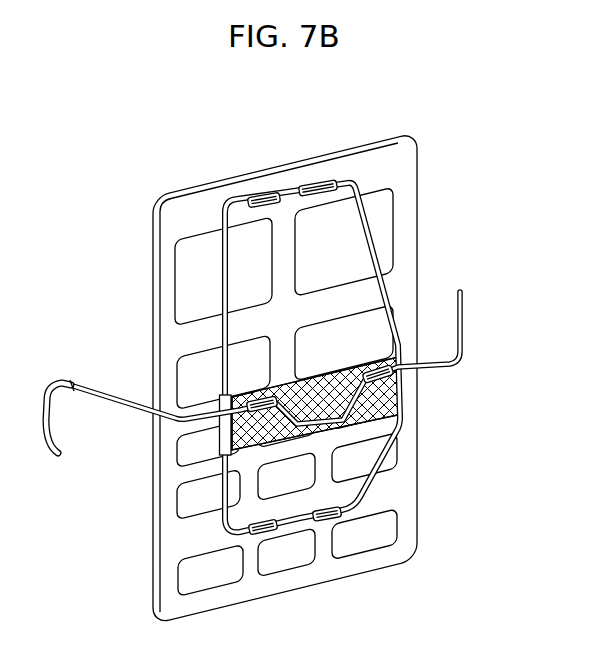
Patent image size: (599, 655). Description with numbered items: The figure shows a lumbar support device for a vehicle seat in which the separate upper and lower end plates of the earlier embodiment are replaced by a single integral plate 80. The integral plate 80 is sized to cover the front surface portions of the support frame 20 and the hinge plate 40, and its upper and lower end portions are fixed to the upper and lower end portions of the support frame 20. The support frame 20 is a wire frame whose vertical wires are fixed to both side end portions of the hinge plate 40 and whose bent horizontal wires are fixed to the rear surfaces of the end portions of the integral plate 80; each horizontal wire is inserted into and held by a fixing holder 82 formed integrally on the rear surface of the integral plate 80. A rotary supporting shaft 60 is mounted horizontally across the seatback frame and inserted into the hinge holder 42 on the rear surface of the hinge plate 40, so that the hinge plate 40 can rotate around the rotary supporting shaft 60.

The integral plate 80 is at (420, 213).
The support frame 20 is at (382, 256).
The fixing holder 82 is at (257, 194).
The hinge plate 40 is at (376, 425).
The hinge holder 42 is at (257, 398).
The rotary supporting shaft 60 is at (109, 406).